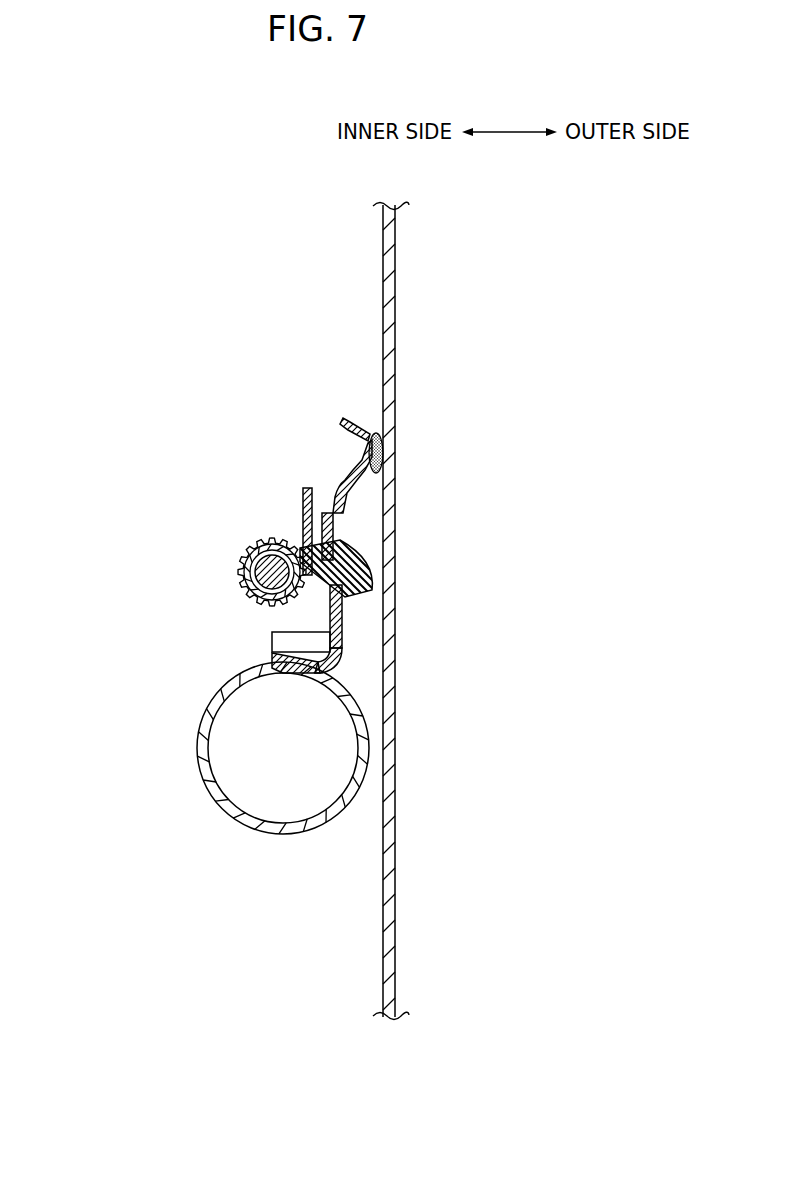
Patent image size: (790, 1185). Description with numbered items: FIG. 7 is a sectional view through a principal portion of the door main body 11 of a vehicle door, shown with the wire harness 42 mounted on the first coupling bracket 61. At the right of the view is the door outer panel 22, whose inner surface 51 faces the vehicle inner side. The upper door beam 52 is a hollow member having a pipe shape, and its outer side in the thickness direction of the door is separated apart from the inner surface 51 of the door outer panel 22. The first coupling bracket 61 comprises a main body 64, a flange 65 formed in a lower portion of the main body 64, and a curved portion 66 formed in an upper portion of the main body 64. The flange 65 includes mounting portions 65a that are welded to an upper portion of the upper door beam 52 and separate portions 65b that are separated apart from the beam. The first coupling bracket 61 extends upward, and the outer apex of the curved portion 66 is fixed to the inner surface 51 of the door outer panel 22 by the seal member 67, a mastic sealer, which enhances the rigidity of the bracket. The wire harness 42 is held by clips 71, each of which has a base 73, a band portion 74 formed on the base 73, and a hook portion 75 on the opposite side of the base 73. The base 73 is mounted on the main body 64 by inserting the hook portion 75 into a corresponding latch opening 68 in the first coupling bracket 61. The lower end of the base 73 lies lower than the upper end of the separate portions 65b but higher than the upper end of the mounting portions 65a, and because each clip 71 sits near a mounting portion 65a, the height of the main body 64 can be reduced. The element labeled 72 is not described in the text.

The door main body 11 is at (137, 322).
The door outer panel 22 is at (395, 268).
The wire harness 42 is at (245, 557).
The inner surface 51 is at (383, 920).
The upper door beam 52 is at (197, 748).
The first coupling bracket 61 is at (352, 636).
The main body 64 is at (343, 606).
The flange 65 is at (193, 628).
The mounting portions 65a is at (262, 655).
The separate portions 65b is at (292, 632).
The curved portion 66 is at (348, 440).
The seal member 67 is at (372, 438).
The latch openings 68 is at (356, 573).
The clips 71 is at (294, 527).
The guide surface 72 is at (250, 542).
The base 73 is at (333, 510).
The band portion 74 is at (302, 512).
The hook portion 75 is at (346, 542).